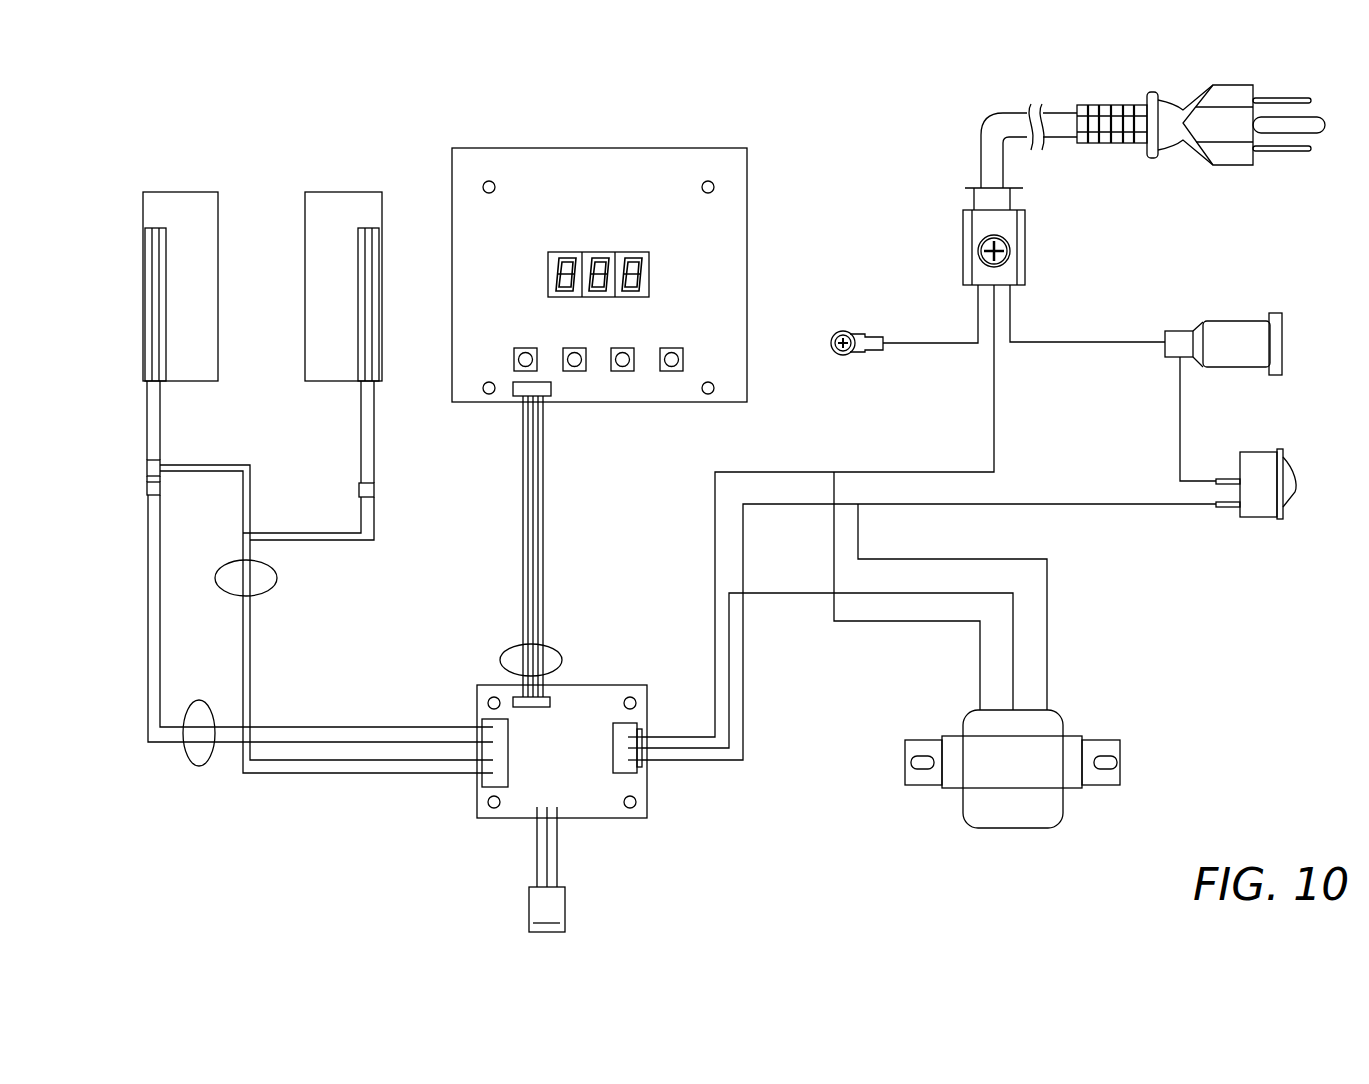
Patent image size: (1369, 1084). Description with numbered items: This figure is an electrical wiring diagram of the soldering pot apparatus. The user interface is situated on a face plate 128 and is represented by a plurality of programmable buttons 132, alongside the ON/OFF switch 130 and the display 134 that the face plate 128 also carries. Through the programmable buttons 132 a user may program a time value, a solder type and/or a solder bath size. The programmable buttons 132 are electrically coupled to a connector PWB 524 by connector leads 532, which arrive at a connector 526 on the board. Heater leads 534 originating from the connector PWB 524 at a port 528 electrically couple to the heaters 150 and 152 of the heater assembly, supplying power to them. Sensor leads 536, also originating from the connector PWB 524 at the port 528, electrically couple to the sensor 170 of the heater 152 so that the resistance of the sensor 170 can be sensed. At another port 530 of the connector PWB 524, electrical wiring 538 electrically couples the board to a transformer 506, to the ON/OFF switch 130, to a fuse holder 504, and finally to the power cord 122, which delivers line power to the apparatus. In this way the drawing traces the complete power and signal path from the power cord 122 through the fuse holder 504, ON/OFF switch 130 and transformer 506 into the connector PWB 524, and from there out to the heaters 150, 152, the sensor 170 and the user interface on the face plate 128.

The power cord 122 is at (1195, 156).
The face plate 128 is at (747, 188).
The ON/OFF switch 130 is at (1283, 455).
The programmable buttons 132 is at (683, 360).
The display 134 is at (649, 275).
The heater 150 is at (343, 192).
The heater 152 is at (182, 192).
The sensor 170 is at (147, 487).
The fuse holder 504 is at (1282, 343).
The transformer 506 is at (1055, 712).
The connector PWB 524 is at (613, 685).
The ribbon connector 526 is at (550, 702).
The port 528 is at (491, 785).
The port 530 is at (627, 773).
The connector leads 532 is at (545, 545).
The heater leads 534 is at (277, 578).
The sensor leads 536 is at (201, 767).
The electrical wiring 538 is at (703, 757).